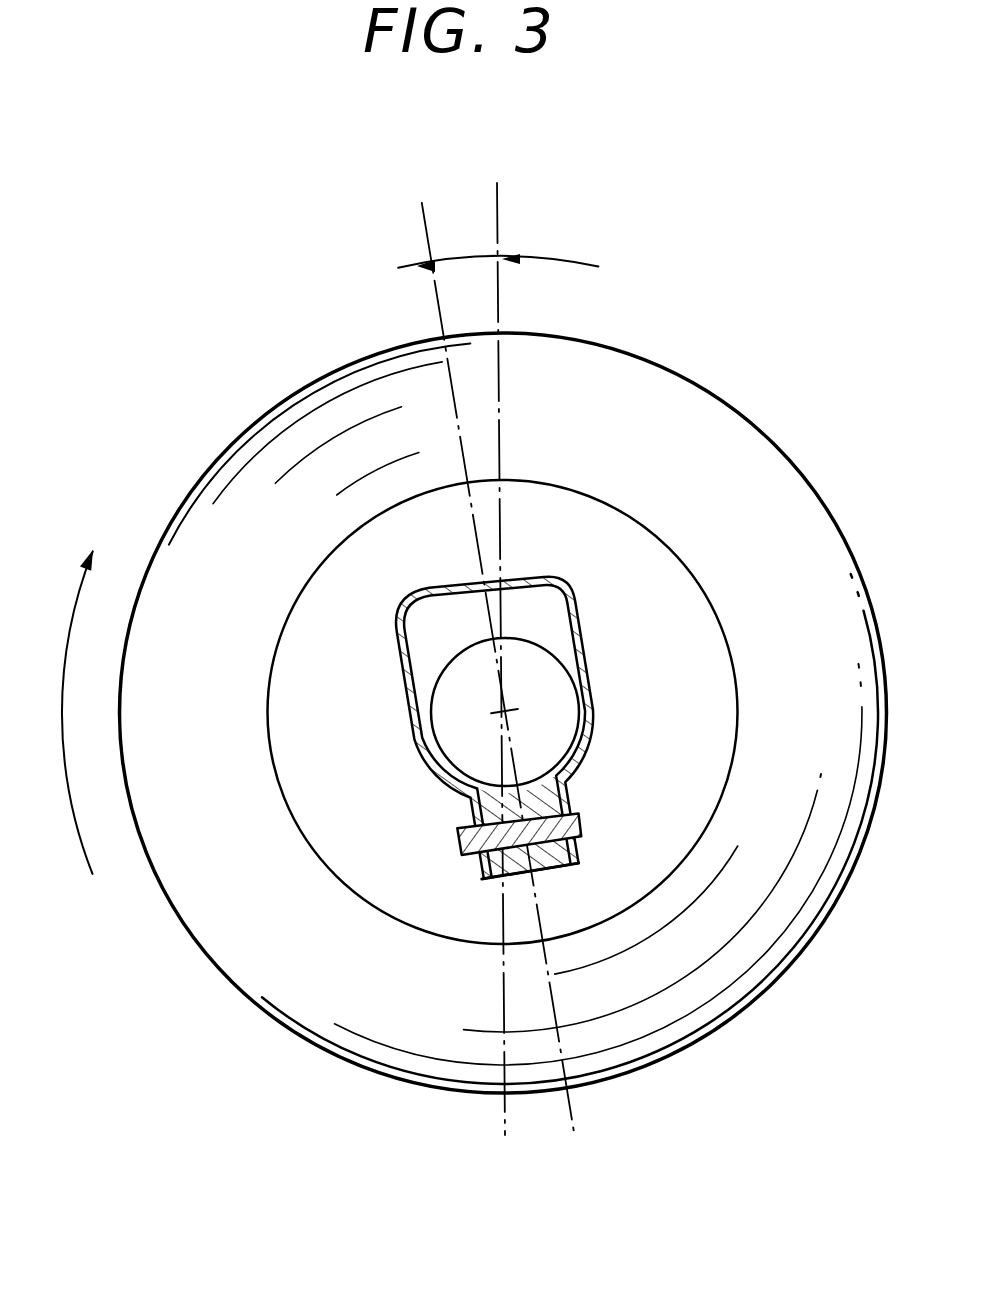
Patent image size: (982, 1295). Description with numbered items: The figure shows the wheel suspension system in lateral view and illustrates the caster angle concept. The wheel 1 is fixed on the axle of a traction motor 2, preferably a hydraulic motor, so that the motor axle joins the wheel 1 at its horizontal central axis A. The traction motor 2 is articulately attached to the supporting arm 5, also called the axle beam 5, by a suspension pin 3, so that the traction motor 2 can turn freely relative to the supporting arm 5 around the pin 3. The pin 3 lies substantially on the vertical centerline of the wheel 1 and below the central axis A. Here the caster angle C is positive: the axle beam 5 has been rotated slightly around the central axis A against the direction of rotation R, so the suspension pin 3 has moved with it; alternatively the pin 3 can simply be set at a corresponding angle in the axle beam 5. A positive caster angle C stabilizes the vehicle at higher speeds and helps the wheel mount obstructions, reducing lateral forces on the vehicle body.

The wheel 1 is at (793, 511).
The traction motor 2 is at (550, 698).
The suspension pin 3 is at (580, 828).
The supporting arm 5 is at (402, 629).
The horizontal central axis A is at (500, 713).
The caster angle C is at (498, 242).
The direction of rotation R is at (61, 712).